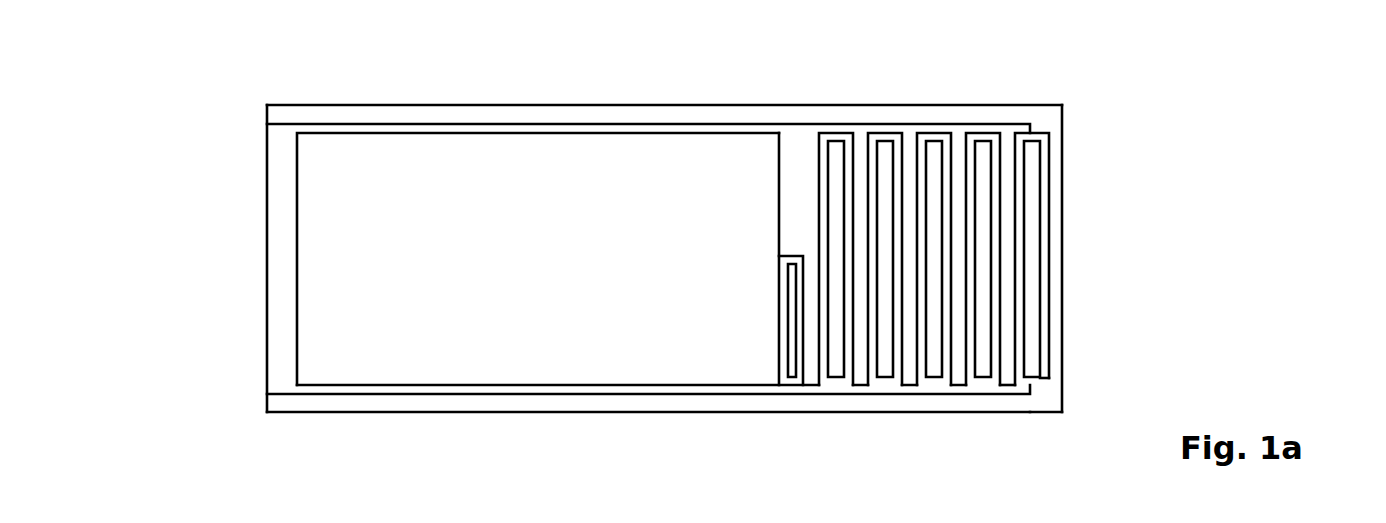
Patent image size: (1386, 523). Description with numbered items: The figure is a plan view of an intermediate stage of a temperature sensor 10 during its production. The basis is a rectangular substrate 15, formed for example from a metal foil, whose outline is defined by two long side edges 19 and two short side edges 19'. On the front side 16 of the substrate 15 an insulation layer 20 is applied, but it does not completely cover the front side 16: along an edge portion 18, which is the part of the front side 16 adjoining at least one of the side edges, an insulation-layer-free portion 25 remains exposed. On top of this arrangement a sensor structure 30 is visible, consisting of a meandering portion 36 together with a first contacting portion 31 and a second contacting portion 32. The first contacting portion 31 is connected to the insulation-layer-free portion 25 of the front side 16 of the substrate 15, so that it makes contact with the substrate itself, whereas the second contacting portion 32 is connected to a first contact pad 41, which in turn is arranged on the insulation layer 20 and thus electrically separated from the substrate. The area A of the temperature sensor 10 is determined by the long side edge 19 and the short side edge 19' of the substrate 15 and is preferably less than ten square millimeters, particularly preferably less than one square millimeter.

The temperature sensor 10 is at (1100, 114).
The substrate 15 is at (305, 117).
The front side 16 is at (492, 121).
The edge portion 18 is at (1047, 125).
The long side edges 19 is at (648, 260).
The short side edges 19' is at (664, 258).
The insulation layer 20 is at (800, 146).
The insulation-layer-free portion 25 is at (1047, 395).
The sensor structure 30 is at (870, 104).
The first contacting portion 31 is at (1049, 379).
The second contacting portion 32 is at (788, 283).
The meandering portion 36 is at (860, 386).
The first contact pad 41 is at (378, 148).
The area A is at (1008, 115).